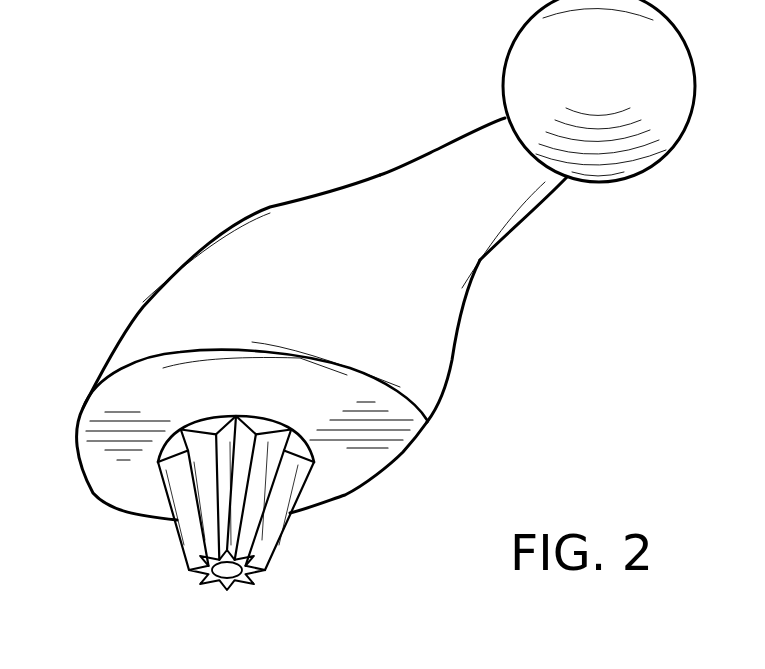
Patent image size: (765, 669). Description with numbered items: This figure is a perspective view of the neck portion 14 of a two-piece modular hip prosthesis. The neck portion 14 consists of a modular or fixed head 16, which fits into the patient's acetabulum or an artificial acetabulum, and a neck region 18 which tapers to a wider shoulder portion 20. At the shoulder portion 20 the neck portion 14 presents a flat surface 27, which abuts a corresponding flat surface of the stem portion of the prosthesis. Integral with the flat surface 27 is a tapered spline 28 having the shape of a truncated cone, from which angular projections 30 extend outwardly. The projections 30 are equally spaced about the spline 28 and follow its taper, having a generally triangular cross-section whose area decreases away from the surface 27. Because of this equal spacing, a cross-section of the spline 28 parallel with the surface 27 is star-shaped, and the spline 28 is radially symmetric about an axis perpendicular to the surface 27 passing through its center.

The neck portion 14 is at (446, 320).
The head 16 is at (681, 68).
The neck region 18 is at (466, 147).
The shoulder portion 20 is at (95, 369).
The flat surface 27 is at (366, 470).
The tapered spline 28 is at (281, 519).
The angular projections 30 is at (190, 560).